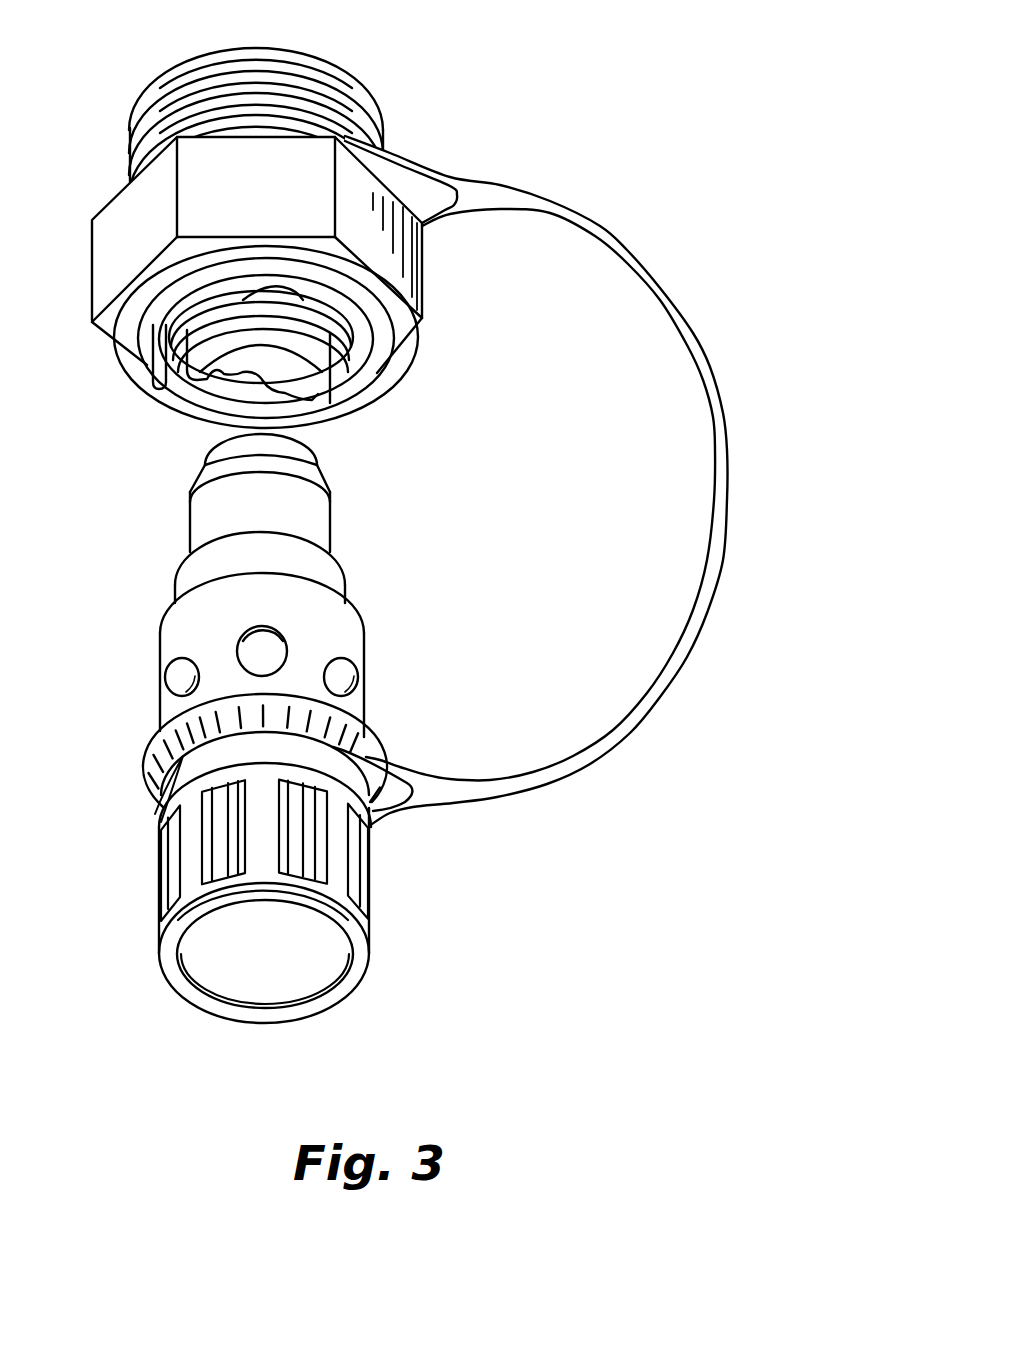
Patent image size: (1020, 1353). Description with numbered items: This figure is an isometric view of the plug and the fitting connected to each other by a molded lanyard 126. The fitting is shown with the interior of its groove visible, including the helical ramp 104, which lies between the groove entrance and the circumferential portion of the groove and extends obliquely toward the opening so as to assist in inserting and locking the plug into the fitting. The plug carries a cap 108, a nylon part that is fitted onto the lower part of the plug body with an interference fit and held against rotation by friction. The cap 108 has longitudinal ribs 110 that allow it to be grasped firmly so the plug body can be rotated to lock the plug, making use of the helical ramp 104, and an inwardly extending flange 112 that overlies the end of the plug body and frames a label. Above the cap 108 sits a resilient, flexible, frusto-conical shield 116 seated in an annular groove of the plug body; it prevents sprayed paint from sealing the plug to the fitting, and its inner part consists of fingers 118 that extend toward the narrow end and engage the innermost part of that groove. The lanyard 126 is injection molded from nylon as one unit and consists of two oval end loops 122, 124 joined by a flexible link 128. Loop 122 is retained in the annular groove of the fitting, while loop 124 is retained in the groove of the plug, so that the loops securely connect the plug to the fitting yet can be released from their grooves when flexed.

The helical ramp 104 is at (264, 390).
The cap 108 is at (157, 929).
The longitudinal ribs 110 is at (298, 838).
The inwardly extending flange 112 is at (350, 980).
The shield 116 is at (158, 743).
The fingers 118 is at (184, 752).
The end loop 122 is at (408, 163).
The end loop 124 is at (400, 766).
The molded lanyard 126 is at (610, 480).
The flexible link 128 is at (720, 538).